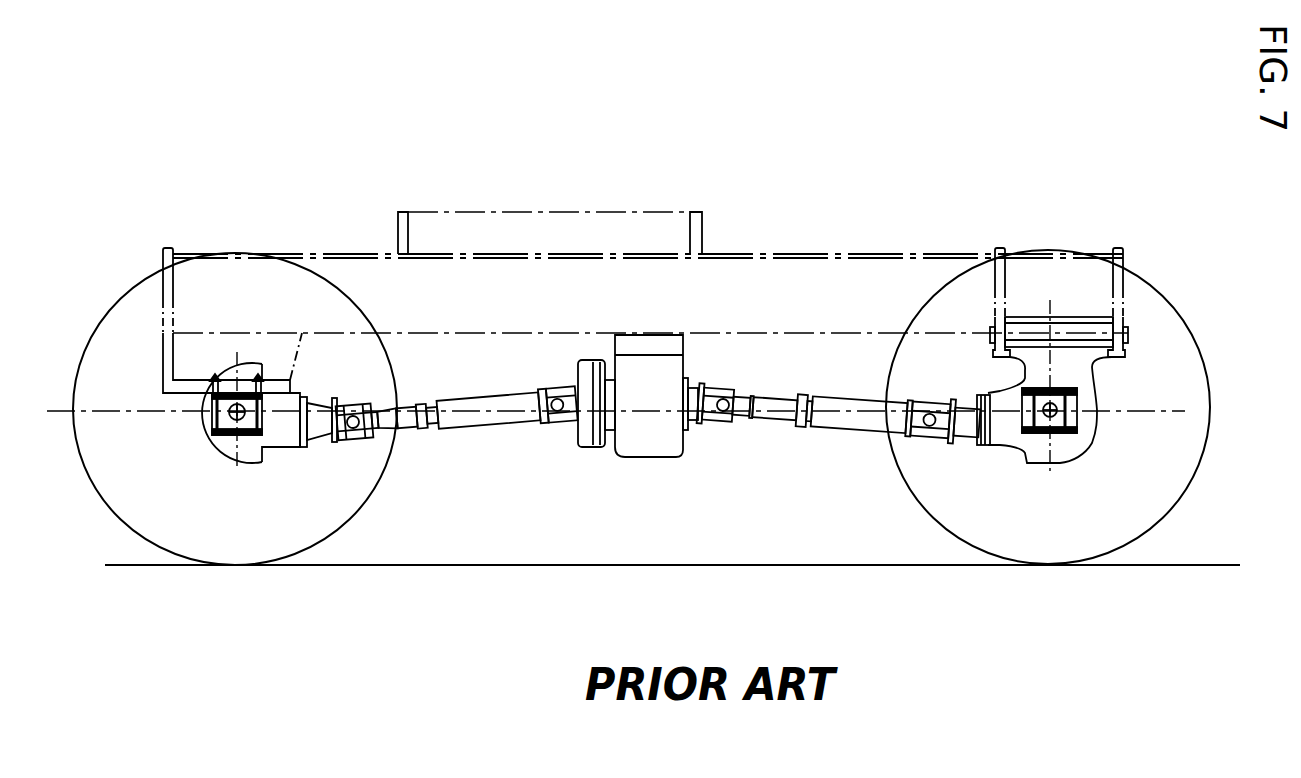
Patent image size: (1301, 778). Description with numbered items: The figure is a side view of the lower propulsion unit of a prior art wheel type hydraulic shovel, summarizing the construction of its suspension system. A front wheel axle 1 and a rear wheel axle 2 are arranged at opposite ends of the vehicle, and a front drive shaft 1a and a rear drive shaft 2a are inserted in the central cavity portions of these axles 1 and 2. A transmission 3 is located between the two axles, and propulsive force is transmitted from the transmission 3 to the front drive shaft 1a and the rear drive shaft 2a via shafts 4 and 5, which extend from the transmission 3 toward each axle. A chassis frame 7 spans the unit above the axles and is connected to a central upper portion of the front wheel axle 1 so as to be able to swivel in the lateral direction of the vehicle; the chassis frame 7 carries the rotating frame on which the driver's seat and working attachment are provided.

The chassis frame 7 is at (905, 272).
The transmission 3 is at (663, 427).
The shaft 5 is at (500, 410).
The shaft 4 is at (780, 413).
The rear wheel axle 2 is at (226, 437).
The rear drive shaft 2a is at (238, 420).
The front wheel axle 1 is at (1017, 463).
The front drive shaft 1a is at (1060, 433).